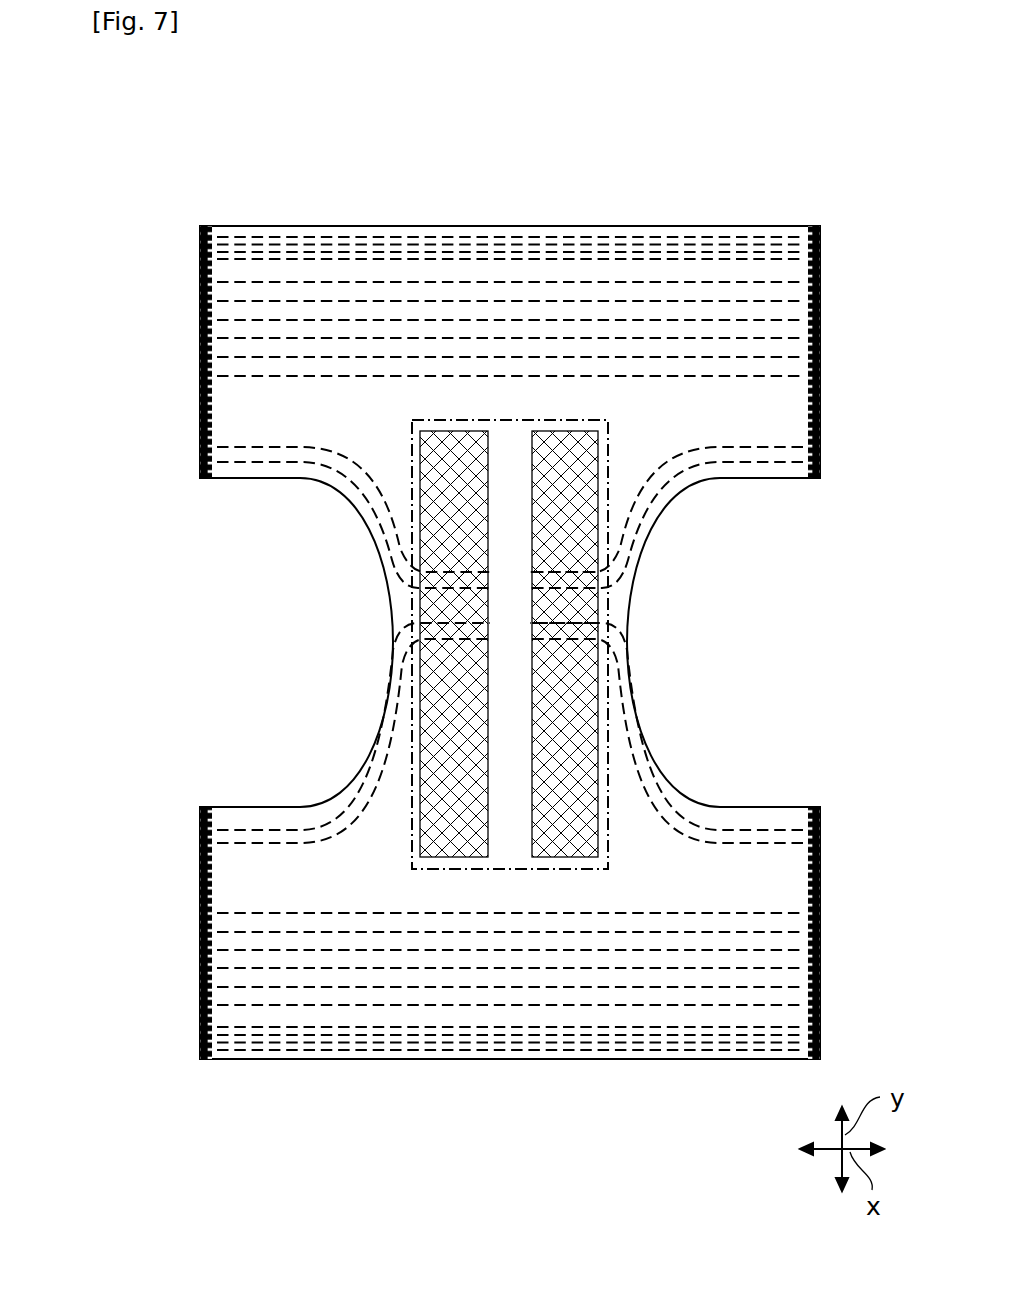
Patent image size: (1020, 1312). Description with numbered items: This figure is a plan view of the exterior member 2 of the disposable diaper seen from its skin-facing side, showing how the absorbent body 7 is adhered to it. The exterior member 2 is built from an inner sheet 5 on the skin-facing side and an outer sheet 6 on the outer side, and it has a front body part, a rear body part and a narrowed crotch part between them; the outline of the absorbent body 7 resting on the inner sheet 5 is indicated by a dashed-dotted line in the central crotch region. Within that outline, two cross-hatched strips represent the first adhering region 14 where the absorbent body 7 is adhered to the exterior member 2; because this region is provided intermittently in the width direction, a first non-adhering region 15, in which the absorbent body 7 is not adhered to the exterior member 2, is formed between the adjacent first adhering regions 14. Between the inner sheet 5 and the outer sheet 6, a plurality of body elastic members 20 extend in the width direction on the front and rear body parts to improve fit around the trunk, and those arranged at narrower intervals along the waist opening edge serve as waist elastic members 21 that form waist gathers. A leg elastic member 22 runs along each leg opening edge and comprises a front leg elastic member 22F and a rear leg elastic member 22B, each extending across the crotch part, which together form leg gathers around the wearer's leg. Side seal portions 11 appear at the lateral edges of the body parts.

The exterior member 2 is at (709, 153).
The inner sheet 5 is at (668, 273).
The outer sheet 6 is at (703, 226).
The absorbent body 7 is at (612, 606).
The side seal portion 11 is at (200, 330).
The first adhering region 14 is at (472, 674).
The first non-adhering region 15 is at (527, 721).
The body elastic members 20 is at (363, 278).
The waist elastic members 21 is at (295, 235).
The leg elastic member 22 is at (506, 645).
The front leg elastic member 22F is at (237, 480).
The rear leg elastic member 22B is at (237, 806).